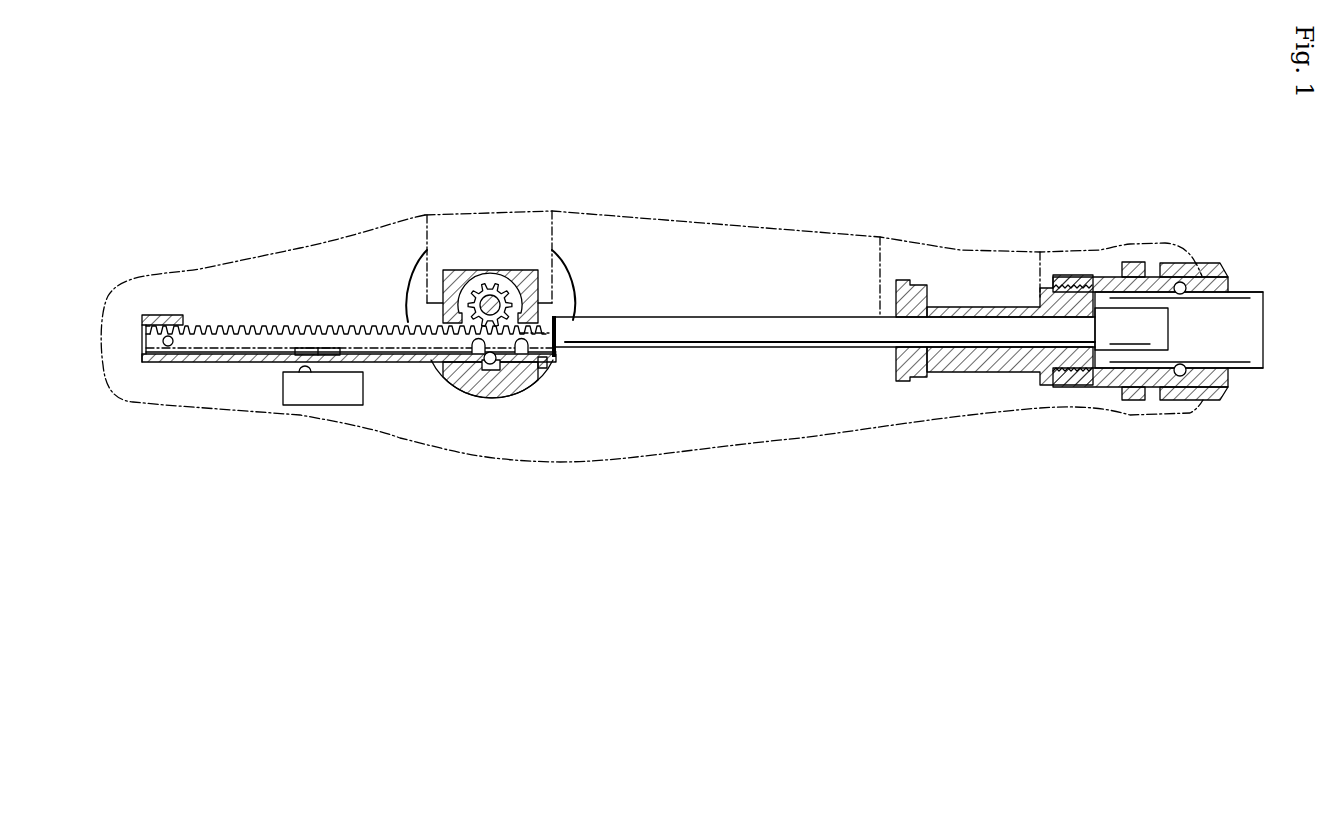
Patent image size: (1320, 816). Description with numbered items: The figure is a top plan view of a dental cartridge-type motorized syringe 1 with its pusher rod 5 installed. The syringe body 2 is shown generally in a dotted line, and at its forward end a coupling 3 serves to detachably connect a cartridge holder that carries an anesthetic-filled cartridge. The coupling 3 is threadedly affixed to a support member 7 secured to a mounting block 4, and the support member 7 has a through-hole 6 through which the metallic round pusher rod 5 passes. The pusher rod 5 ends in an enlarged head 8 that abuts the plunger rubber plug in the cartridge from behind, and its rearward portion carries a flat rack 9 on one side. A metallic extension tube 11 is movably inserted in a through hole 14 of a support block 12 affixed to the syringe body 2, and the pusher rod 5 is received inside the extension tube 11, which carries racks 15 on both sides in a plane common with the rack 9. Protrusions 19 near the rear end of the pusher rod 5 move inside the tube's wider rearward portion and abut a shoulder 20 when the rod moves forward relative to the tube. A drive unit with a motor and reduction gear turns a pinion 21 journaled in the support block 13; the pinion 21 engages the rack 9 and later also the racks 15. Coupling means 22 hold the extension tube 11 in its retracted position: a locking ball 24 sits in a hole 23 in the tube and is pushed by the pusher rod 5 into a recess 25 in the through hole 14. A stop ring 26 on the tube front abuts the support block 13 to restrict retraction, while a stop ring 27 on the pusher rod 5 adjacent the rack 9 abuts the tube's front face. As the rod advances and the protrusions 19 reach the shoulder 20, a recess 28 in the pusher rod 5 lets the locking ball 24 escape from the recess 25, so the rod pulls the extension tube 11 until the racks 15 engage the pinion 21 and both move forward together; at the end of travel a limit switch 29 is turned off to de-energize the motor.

The motorized syringe 1 is at (806, 457).
The syringe body 2 is at (830, 230).
The coupling 3 is at (1205, 268).
The mounting block 4 is at (978, 270).
The pusher rod 5 is at (717, 353).
The through-hole 6 is at (928, 342).
The support member 7 is at (988, 372).
The enlarged head 8 is at (1140, 332).
The rack 9 is at (378, 326).
The extension tube 11 is at (178, 312).
The support block 12 is at (513, 245).
The support block 13 is at (460, 277).
The through hole 14 is at (528, 380).
The racks 15 is at (282, 325).
The protrusions 19 is at (168, 347).
The shoulder 20 is at (346, 343).
The pinion 21 is at (513, 300).
The coupling means 22 is at (451, 465).
The hole 23 is at (452, 364).
The locking ball 24 is at (490, 366).
The recess 25 is at (498, 385).
The stop ring 26 is at (550, 368).
The stop ring 27 is at (555, 317).
The recess 28 is at (305, 373).
The limit switch 29 is at (337, 388).